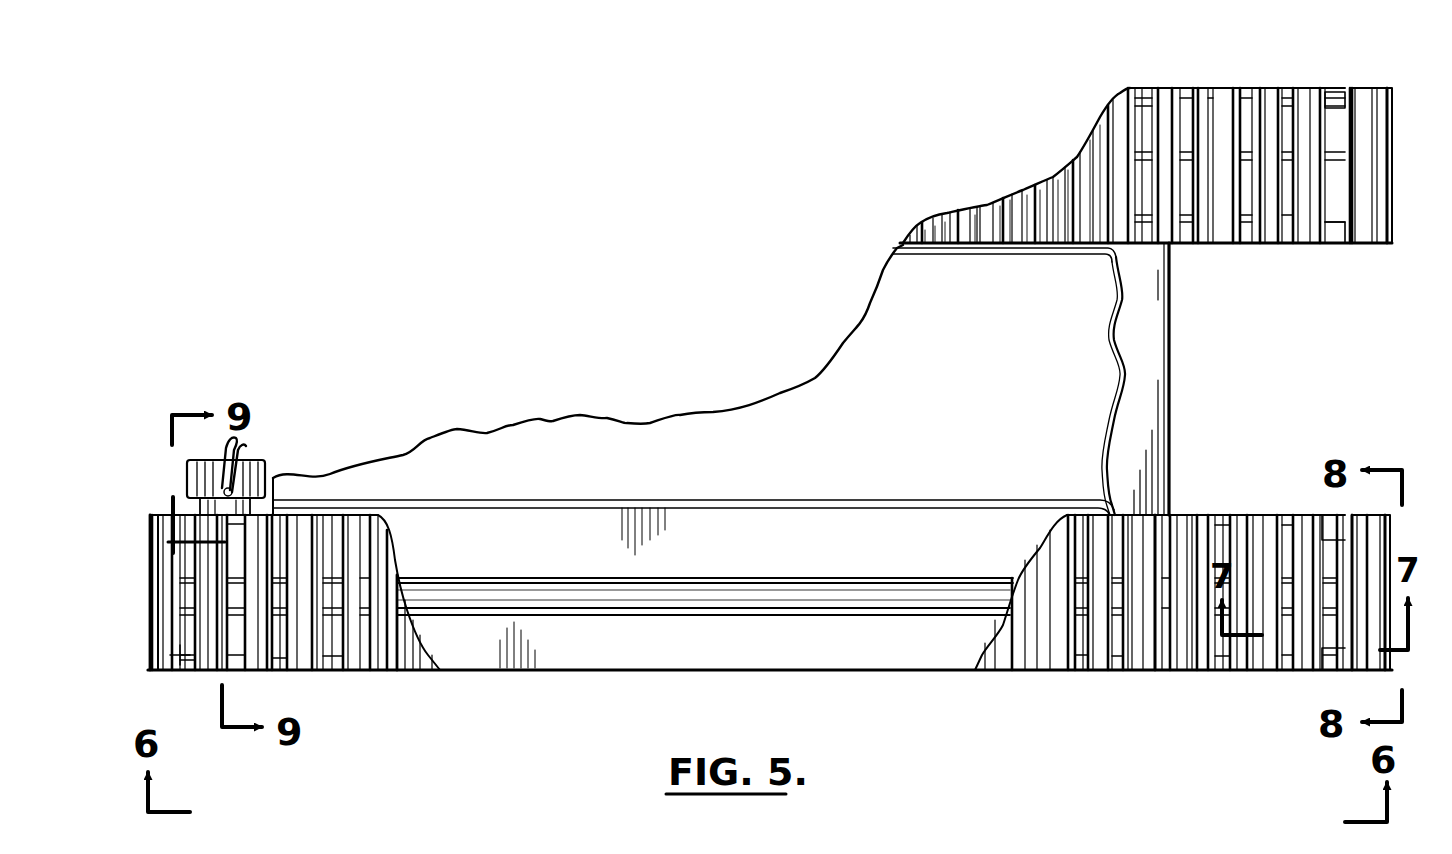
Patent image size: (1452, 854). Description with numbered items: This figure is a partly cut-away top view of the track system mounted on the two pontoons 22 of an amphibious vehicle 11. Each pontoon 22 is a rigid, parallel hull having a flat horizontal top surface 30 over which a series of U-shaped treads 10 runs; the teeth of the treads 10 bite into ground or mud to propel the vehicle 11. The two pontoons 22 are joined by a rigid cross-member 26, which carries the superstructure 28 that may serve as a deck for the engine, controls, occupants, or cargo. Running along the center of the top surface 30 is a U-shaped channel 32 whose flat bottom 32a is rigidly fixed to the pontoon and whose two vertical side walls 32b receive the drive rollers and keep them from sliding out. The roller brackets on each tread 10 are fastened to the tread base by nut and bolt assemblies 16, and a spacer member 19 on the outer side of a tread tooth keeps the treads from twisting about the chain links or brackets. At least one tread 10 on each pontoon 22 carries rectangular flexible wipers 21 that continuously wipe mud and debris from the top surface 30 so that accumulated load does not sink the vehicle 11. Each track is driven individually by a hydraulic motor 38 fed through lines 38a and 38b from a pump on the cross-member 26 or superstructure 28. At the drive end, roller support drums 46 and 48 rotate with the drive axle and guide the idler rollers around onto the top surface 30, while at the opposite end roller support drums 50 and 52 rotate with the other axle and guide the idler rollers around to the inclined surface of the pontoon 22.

The tread 10 is at (1262, 86).
The vehicle 11 is at (1278, 360).
The nut and bolt assembly 16 is at (1157, 674).
The spacer member 19 is at (1163, 88).
The wiper 21 is at (1196, 125).
The pontoon 22 is at (1200, 248).
The cross-member 26 is at (1176, 397).
The superstructure 28 is at (1108, 326).
The flat horizontal top surface 30 is at (608, 652).
The U-shaped channel 32 is at (552, 576).
The flat bottom 32a is at (742, 596).
The side wall 32b is at (672, 578).
The motor 38 is at (275, 465).
The line 38a is at (236, 436).
The line 38b is at (244, 454).
The roller support drum 46 is at (184, 512).
The roller support drum 48 is at (192, 674).
The roller support drum 50 is at (1338, 102).
The roller support drum 52 is at (1328, 244).